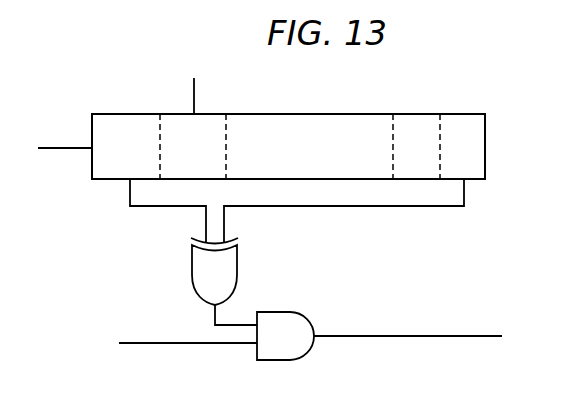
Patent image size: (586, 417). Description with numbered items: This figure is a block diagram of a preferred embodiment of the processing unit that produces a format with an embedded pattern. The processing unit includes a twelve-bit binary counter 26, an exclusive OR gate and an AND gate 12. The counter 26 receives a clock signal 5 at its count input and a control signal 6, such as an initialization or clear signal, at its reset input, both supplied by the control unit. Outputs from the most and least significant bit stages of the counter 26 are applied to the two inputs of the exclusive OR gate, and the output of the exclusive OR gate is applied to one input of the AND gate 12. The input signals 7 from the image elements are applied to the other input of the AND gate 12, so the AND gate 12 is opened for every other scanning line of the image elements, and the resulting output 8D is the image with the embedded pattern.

The clock signal 5 is at (66, 148).
The control signal 6 is at (193, 83).
The 12-bit binary counter 26 is at (389, 115).
The input signals 7 is at (152, 345).
The AND gate 12 is at (267, 361).
The output line 8D is at (397, 336).